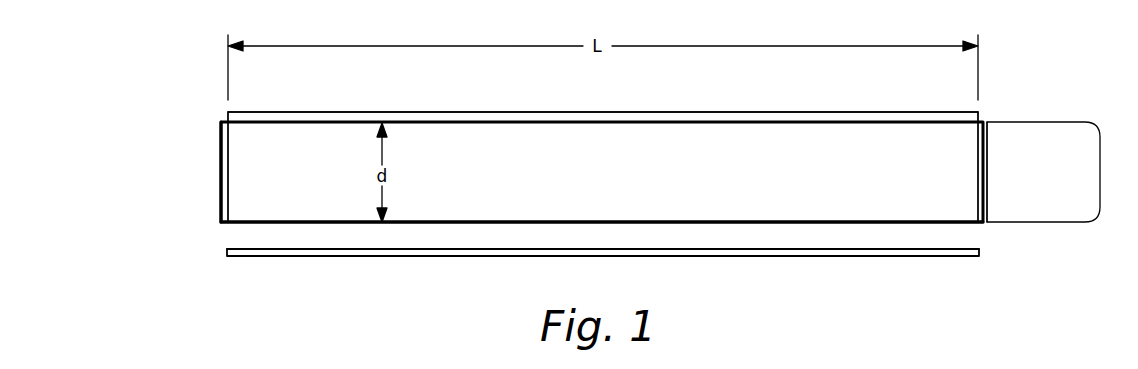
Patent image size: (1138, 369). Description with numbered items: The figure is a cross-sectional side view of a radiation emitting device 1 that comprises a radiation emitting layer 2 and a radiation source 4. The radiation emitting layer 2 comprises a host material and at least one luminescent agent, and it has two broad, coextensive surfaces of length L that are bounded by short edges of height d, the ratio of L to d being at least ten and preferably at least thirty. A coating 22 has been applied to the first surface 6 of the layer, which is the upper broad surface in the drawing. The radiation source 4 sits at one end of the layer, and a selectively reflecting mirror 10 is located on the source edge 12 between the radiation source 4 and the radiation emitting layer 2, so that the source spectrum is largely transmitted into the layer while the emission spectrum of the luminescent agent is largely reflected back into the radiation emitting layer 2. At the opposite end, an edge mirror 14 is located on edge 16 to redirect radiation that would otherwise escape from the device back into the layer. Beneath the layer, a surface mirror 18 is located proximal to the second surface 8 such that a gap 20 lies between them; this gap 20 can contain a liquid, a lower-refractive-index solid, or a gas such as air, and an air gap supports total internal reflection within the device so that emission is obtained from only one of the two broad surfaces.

The radiation emitting device 1 is at (172, 102).
The radiation emitting layer 2 is at (765, 188).
The radiation source 4 is at (1038, 127).
The first surface 6 is at (570, 122).
The second surface 8 is at (480, 222).
The selectively reflecting mirror 10 is at (987, 192).
The source edge 12 is at (978, 175).
The edge mirror 14 is at (221, 191).
The edge 16 is at (228, 172).
The surface mirror 18 is at (703, 257).
The gap 20 is at (328, 238).
The coating 22 is at (738, 113).